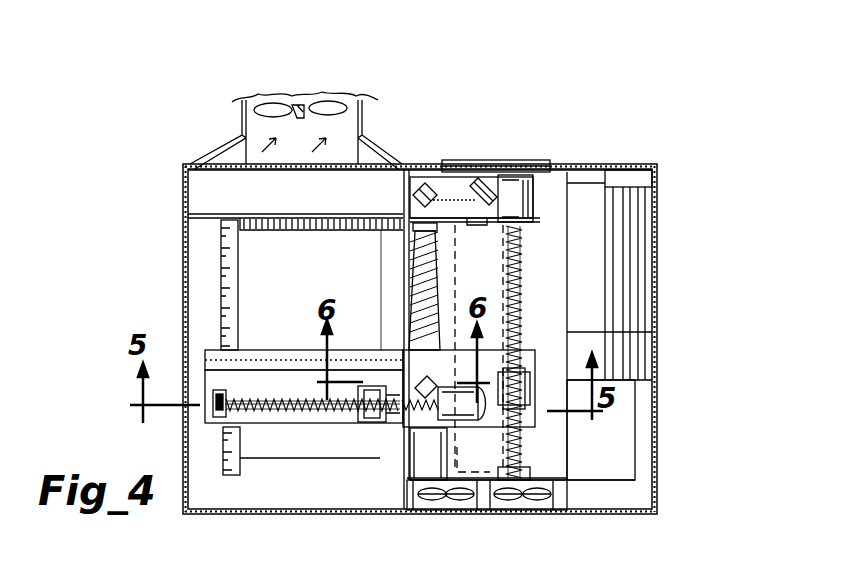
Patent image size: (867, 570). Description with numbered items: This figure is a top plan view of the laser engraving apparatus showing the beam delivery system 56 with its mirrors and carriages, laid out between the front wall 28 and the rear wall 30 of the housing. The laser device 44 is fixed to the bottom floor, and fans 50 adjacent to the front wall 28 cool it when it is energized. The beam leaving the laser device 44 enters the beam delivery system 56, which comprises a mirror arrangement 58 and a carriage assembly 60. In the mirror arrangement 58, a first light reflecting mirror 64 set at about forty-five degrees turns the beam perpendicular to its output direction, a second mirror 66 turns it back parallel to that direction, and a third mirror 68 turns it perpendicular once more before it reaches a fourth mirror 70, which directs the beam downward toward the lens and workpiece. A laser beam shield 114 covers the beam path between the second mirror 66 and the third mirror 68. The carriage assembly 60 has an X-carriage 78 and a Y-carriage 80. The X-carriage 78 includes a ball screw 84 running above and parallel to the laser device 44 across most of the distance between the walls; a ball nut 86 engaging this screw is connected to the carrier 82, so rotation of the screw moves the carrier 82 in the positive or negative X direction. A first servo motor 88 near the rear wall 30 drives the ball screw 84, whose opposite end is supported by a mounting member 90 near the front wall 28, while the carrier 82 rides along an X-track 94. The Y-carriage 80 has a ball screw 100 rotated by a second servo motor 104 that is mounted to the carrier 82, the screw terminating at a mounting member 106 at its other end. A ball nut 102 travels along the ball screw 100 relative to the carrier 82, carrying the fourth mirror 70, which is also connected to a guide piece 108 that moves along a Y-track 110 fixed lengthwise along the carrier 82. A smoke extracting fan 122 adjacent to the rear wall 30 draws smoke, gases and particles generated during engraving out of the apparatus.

The front wall 28 is at (652, 516).
The rear wall 30 is at (655, 170).
The laser device 44 is at (490, 254).
The fans 50 is at (462, 500).
The beam delivery system 56 is at (453, 191).
The mirror arrangement 58 is at (490, 190).
The carriage assembly 60 is at (462, 433).
The first light reflecting mirror 64 is at (530, 196).
The second mirror 66 is at (415, 190).
The third mirror 68 is at (428, 383).
The fourth mirror 70 is at (401, 443).
The X-carriage 78 is at (525, 317).
The Y-carriage 80 is at (333, 418).
The carrier 82 is at (532, 422).
The ball screw 84 is at (553, 278).
The ball nut 86 is at (530, 380).
The first servo motor 88 is at (580, 168).
The mounting member 90 is at (537, 472).
The X-track 94 is at (410, 250).
The ball screw 100 is at (273, 410).
The ball nut 102 is at (367, 427).
The second servo motor 104 is at (470, 420).
The mounting member 106 is at (217, 423).
The guide piece 108 is at (370, 362).
The Y-track 110 is at (217, 368).
The laser beam shield 114 is at (417, 288).
The smoke extracting fan 122 is at (268, 108).